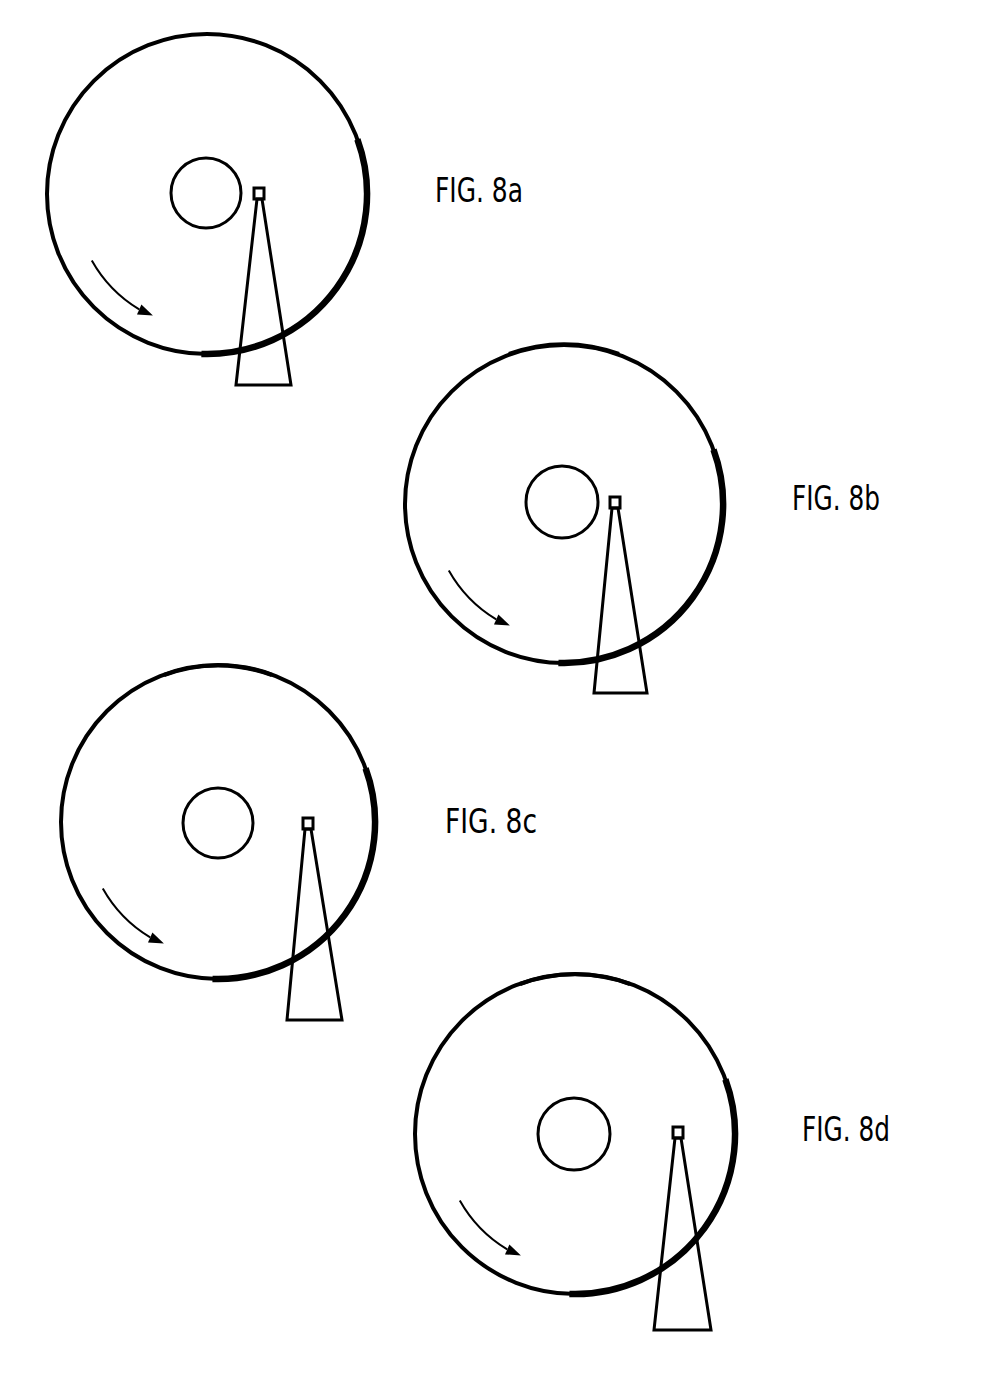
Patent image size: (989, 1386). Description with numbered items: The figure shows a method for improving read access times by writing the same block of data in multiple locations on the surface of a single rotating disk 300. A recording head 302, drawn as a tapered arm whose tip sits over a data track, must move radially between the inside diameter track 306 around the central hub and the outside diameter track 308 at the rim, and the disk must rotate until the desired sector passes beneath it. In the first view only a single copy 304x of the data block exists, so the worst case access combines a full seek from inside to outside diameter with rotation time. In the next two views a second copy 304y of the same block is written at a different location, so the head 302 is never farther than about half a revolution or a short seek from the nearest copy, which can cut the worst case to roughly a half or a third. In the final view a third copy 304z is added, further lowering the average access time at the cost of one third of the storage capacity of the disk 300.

In FIG. 8a, the disk 300 is at (320, 109).
In FIG. 8b, the disk 300 is at (638, 382).
In FIG. 8c, the disk 300 is at (295, 716).
In FIG. 8d, the disk 300 is at (642, 1017).
In FIG. 8a, the recording head 302 is at (265, 192).
In FIG. 8b, the recording head 302 is at (622, 500).
In FIG. 8c, the recording head 302 is at (313, 821).
In FIG. 8d, the recording head 302 is at (685, 1131).
In FIG. 8a, the copy of the data block 304x is at (78, 128).
In FIG. 8b, the copy of the data block 304x is at (418, 502).
In FIG. 8c, the copy of the data block 304x is at (115, 722).
In FIG. 8d, the copy of the data block 304x is at (462, 1038).
In FIG. 8b, the copy of the data block 304y is at (617, 475).
In FIG. 8c, the copy of the data block 304y is at (259, 877).
In FIG. 8d, the copy of the data block 304y is at (575, 1200).
In FIG. 8d, the copy of the data block 304z is at (662, 1078).
In FIG. 8a, the inside diameter track 306 is at (206, 193).
In FIG. 8b, the inside diameter track 306 is at (563, 538).
In FIG. 8c, the inside diameter track 306 is at (219, 860).
In FIG. 8d, the inside diameter track 306 is at (538, 1133).
In FIG. 8b, the outside diameter track 308 is at (560, 344).
In FIG. 8c, the outside diameter track 308 is at (218, 666).
In FIG. 8d, the outside diameter track 308 is at (570, 974).